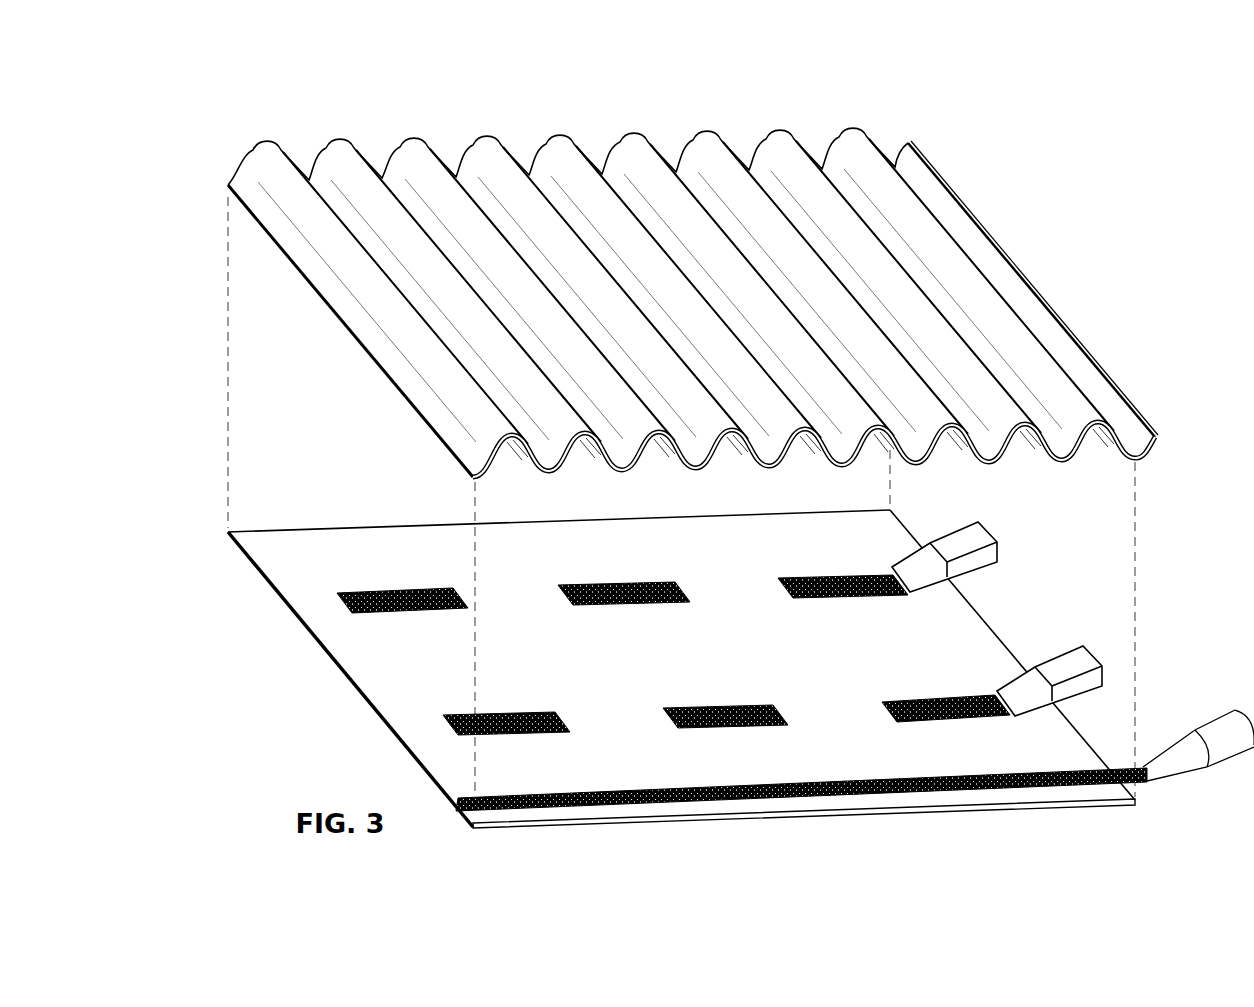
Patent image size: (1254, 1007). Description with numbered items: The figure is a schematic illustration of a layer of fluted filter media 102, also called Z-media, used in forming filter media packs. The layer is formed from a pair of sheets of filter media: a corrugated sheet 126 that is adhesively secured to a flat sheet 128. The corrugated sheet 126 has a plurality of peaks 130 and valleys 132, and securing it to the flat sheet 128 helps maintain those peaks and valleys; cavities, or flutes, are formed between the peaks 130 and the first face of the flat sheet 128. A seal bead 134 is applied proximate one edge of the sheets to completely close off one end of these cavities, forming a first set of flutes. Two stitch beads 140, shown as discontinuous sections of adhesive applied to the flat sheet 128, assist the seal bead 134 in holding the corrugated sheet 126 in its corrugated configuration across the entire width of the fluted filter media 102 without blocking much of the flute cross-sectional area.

The fluted filter media 102 is at (220, 145).
The corrugated sheet 126 is at (782, 165).
The flat sheet 128 is at (315, 617).
The peaks 130 is at (650, 167).
The valleys 132 is at (595, 130).
The seal bead 134 is at (617, 790).
The stitch beads 140 is at (997, 692).